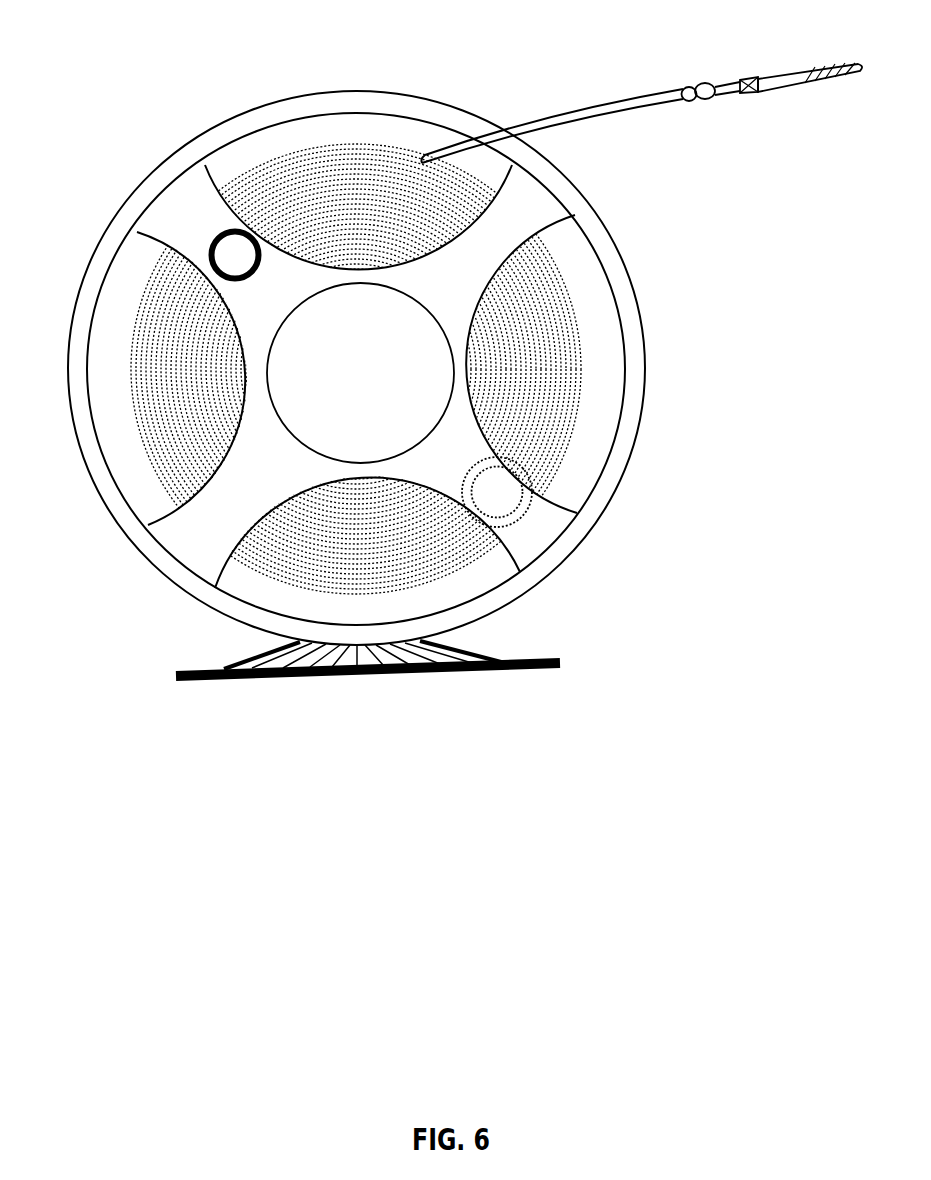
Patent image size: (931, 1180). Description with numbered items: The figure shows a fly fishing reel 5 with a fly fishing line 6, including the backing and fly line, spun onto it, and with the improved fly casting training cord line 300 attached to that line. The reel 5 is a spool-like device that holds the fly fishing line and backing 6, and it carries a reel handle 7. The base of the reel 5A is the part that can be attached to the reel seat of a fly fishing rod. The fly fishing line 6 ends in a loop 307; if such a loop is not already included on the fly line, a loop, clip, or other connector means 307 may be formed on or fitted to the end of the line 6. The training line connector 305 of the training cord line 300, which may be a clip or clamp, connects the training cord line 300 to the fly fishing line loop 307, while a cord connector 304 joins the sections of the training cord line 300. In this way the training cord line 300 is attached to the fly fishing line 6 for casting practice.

The reel 5 is at (147, 101).
The base of the reel 5A is at (202, 678).
The fly fishing line 6 is at (537, 115).
The reel handle 7 is at (512, 502).
The improved fly casting training cord line 300 is at (721, 87).
The cord connector 304 is at (814, 49).
The training line connector 305 is at (696, 86).
The loop 307 is at (664, 90).